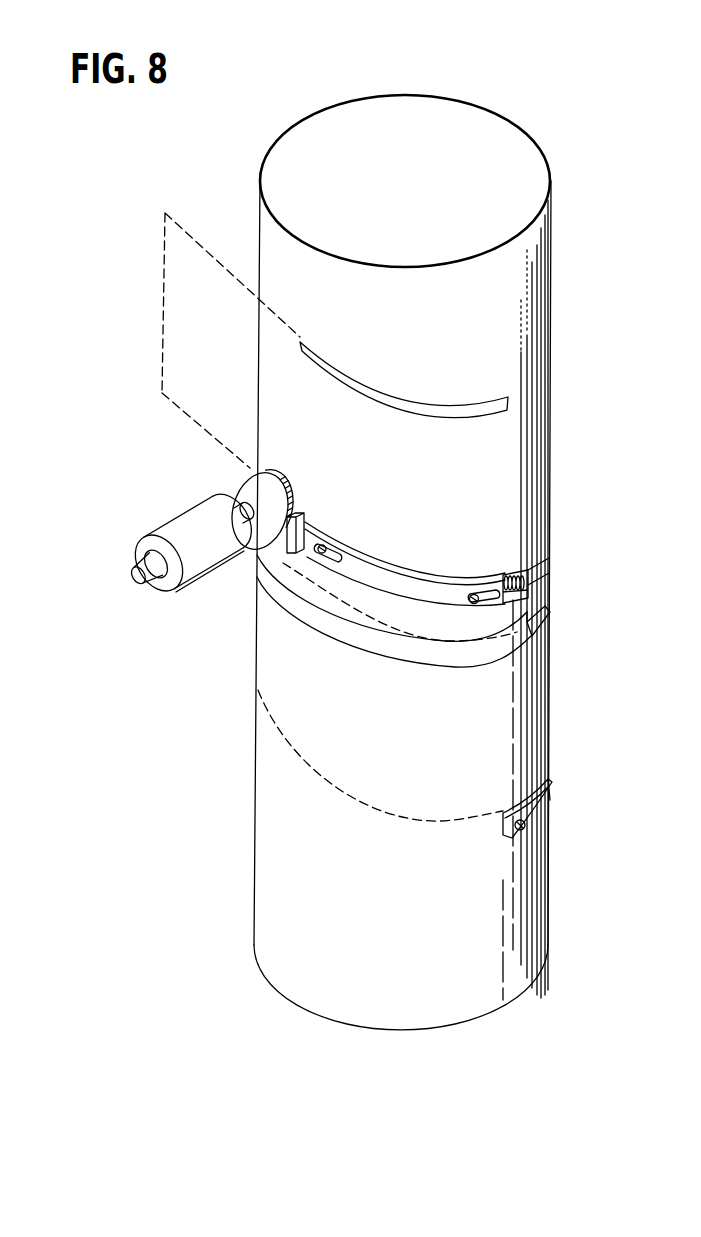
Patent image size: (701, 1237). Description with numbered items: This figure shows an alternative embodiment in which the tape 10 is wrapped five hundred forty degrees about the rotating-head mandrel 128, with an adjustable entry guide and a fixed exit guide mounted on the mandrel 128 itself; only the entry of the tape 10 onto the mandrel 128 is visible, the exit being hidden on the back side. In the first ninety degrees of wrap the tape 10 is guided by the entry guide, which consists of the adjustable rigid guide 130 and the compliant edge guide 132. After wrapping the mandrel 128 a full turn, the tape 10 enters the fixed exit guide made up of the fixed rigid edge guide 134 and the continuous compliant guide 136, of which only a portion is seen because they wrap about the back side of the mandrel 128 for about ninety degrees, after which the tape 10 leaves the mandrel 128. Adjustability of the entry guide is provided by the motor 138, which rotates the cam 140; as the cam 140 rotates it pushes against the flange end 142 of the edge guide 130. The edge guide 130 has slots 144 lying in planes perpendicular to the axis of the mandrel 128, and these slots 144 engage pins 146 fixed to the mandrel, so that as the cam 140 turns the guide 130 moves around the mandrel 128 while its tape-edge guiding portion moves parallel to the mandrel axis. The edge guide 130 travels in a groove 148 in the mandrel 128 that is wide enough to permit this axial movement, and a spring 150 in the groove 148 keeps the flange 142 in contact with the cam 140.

The tape 10 is at (162, 370).
The mandrel 128 is at (522, 252).
The adjustable rigid guide 130 is at (393, 568).
The compliant edge guide 132 is at (428, 410).
The fixed rigid edge guide 134 is at (550, 798).
The continuous compliant guide 136 is at (547, 617).
The motor 138 is at (188, 520).
The cam 140 is at (257, 492).
The flange end 142 is at (293, 545).
The slots 144 is at (343, 553).
The pins 146 is at (326, 546).
The groove 148 is at (527, 590).
The spring 150 is at (527, 575).